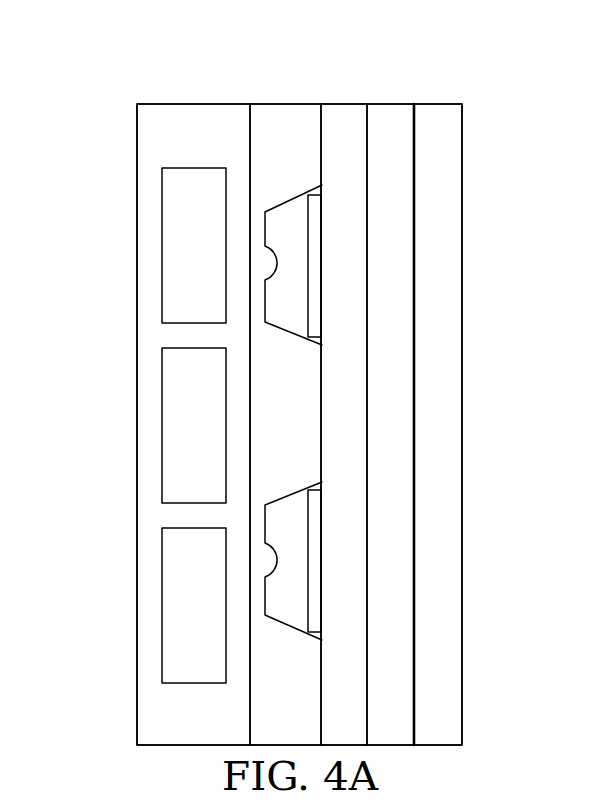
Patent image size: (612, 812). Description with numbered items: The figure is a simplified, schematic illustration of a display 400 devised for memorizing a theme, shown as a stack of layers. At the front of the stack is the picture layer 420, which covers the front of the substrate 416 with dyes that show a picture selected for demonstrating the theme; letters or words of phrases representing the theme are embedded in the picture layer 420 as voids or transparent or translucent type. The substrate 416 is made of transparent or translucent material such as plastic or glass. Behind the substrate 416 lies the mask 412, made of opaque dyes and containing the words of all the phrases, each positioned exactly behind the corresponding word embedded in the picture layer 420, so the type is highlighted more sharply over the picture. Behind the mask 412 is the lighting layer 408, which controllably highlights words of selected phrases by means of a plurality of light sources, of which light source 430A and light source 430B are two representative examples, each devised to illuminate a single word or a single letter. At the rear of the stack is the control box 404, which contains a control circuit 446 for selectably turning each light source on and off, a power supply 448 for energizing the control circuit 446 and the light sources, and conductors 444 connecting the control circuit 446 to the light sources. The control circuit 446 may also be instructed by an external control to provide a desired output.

The display 400 is at (510, 45).
The control box 404 is at (195, 104).
The lighting layer 408 is at (265, 104).
The mask 412 is at (336, 104).
The substrate 416 is at (398, 104).
The picture layer 420 is at (448, 104).
The light source 430A is at (297, 298).
The light source 430B is at (294, 605).
The conductors 444 is at (160, 247).
The control circuit 446 is at (160, 428).
The power supply 448 is at (160, 606).